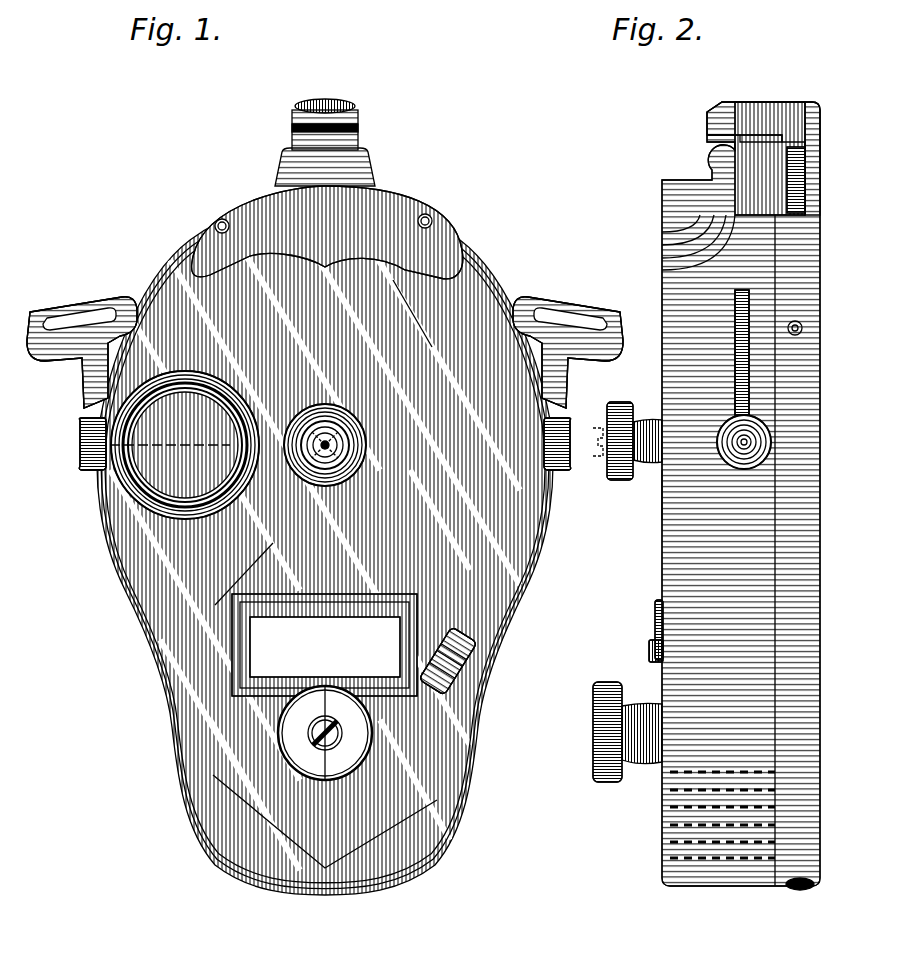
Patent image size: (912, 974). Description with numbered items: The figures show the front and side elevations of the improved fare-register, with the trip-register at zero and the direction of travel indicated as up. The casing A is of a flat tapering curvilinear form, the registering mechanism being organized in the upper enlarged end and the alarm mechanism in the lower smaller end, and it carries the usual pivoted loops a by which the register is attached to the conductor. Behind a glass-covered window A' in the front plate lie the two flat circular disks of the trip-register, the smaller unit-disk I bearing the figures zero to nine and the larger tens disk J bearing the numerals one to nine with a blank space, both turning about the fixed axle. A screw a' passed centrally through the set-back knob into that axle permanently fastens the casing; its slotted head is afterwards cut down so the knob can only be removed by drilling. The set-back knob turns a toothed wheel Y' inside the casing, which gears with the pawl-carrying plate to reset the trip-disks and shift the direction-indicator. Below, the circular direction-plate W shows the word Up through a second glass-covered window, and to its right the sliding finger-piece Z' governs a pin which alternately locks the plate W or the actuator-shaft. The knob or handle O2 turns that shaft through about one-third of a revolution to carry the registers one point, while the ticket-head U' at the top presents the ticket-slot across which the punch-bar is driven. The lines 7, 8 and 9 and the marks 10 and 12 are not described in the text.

In FIG. 1, the casing A is at (325, 546).
In FIG. 2, the casing A is at (741, 496).
In FIG. 1, the window A' is at (176, 492).
In FIG. 2, the window A' is at (645, 509).
In FIG. 1, the ticket-head U' is at (327, 142).
In FIG. 2, the ticket-head U' is at (748, 158).
In FIG. 1, the direction-plate W is at (362, 615).
In FIG. 1, the tens disk J is at (170, 378).
In FIG. 1, the unit-disk I is at (232, 408).
In FIG. 1, the toothed wheel Y' is at (325, 431).
In FIG. 2, the toothed wheel Y' is at (634, 427).
In FIG. 1, the screw a' is at (347, 453).
In FIG. 2, the screw a' is at (597, 462).
In FIG. 1, the pivoted loops a is at (325, 352).
In FIG. 2, the pivoted loops a is at (741, 379).
In FIG. 1, the side knob 10 is at (80, 442).
In FIG. 1, the index mark 12 is at (180, 727).
In FIG. 1, the knob or handle O2 is at (325, 733).
In FIG. 2, the knob or handle O2 is at (627, 744).
In FIG. 1, the finger-piece Z' is at (448, 661).
In FIG. 2, the finger-piece Z' is at (640, 631).
In FIG. 1, the section line 7 is at (263, 185).
In FIG. 1, the section line 8 is at (393, 190).
In FIG. 1, the section line 9 is at (325, 200).